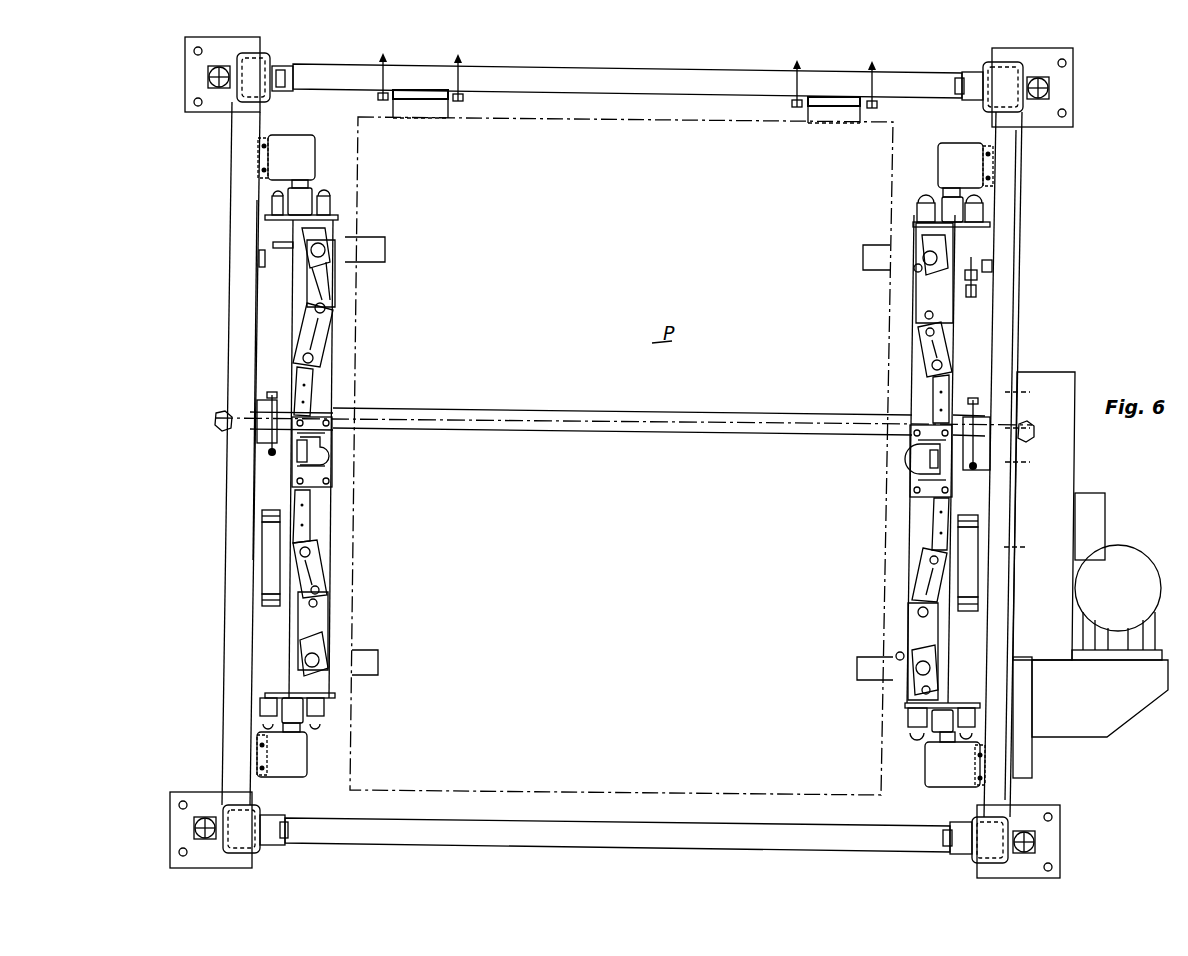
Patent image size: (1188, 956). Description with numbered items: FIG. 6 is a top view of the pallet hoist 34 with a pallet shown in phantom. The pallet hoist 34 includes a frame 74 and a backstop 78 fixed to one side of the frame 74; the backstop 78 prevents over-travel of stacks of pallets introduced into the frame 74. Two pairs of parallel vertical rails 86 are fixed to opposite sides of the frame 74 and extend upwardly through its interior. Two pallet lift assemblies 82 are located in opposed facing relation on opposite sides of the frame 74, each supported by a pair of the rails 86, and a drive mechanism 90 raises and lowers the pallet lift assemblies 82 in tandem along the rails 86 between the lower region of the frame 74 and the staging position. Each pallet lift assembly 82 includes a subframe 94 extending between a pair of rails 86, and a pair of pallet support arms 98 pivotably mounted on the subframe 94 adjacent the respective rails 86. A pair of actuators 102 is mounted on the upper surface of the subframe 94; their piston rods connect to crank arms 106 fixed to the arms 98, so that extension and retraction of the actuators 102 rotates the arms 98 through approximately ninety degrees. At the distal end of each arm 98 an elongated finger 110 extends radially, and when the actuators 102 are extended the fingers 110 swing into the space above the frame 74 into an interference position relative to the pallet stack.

The pallet hoist 34 is at (629, 61).
The frame 74 is at (945, 86).
The backstop 78 is at (418, 106).
The pallet lift assembly 82 is at (338, 377).
The vertical rail 86 is at (296, 203).
The drive mechanism 90 is at (1098, 505).
The subframe 94 is at (328, 466).
The arm 98 is at (322, 243).
The actuator 102 is at (323, 338).
The crank arm 106 is at (918, 266).
The finger 110 is at (386, 237).